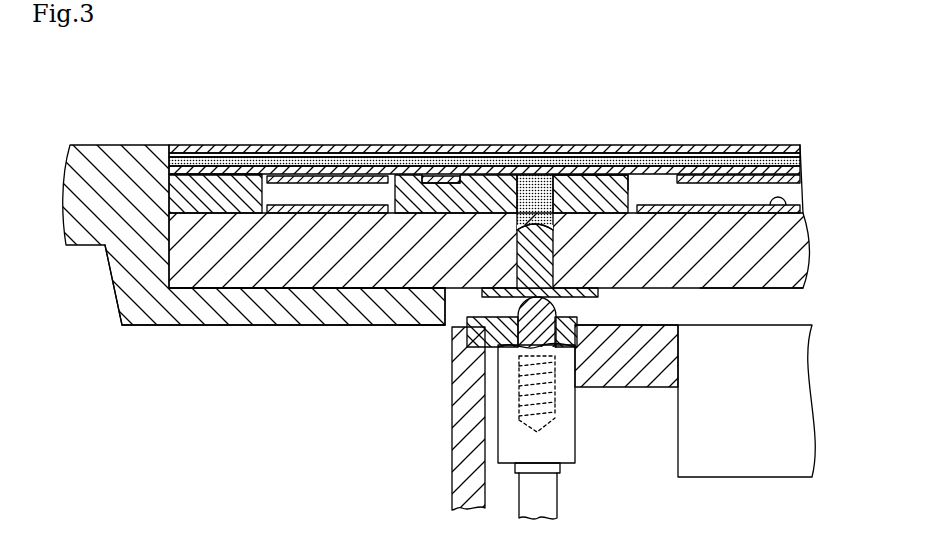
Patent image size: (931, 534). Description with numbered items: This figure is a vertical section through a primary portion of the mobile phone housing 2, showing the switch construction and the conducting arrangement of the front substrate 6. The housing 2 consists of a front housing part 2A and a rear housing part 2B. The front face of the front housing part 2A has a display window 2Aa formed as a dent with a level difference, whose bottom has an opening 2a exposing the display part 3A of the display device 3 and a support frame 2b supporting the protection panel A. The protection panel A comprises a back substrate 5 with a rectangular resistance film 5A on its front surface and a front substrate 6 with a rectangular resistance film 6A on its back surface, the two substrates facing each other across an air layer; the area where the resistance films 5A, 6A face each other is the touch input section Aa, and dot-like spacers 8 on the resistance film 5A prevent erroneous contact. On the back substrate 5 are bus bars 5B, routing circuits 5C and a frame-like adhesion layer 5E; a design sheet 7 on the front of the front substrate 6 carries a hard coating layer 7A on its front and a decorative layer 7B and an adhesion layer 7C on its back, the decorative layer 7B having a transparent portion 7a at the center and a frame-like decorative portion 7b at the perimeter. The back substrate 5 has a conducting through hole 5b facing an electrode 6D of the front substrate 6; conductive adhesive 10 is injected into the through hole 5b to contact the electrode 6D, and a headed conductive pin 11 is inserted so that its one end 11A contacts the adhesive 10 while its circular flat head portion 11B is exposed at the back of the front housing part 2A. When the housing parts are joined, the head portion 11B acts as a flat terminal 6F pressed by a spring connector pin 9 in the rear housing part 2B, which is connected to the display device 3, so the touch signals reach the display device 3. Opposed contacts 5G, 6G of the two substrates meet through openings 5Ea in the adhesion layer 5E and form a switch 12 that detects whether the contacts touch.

The housing 2 is at (290, 290).
The front housing part 2A is at (254, 227).
The display window 2Aa is at (180, 275).
The support frame 2b is at (423, 316).
The rear housing part 2B is at (445, 413).
The opening 2a is at (466, 330).
The display device 3 is at (695, 410).
The display part 3A is at (735, 325).
The back substrate 5 is at (499, 235).
The resistance film 5A is at (745, 246).
The bus bars 5B is at (599, 156).
The conducting through hole 5b is at (562, 176).
The routing circuits 5C is at (438, 176).
The adhesion layer 5E is at (227, 185).
The openings 5Ea is at (368, 206).
The contacts 5G is at (292, 215).
The front substrate 6 is at (678, 176).
The resistance film 6A is at (748, 209).
The electrodes 6D is at (583, 150).
The flat terminal 6F is at (595, 303).
The contacts 6G is at (305, 178).
The design sheet 7 is at (484, 113).
The hard coating layer 7A is at (250, 146).
The decorative layer 7B is at (484, 105).
The transparent portion 7a is at (736, 146).
The decorative portion 7b is at (682, 146).
The adhesion layer 7C is at (472, 174).
The spacers 8 is at (782, 197).
The spring connector pin 9 is at (570, 410).
The conductive adhesive 10 is at (533, 176).
The conductive pin 11 is at (572, 285).
The one end 11A is at (556, 253).
The head portion 11B is at (590, 297).
The switch 12 is at (307, 235).
The protection panel A is at (382, 103).
The touch input section Aa is at (764, 143).